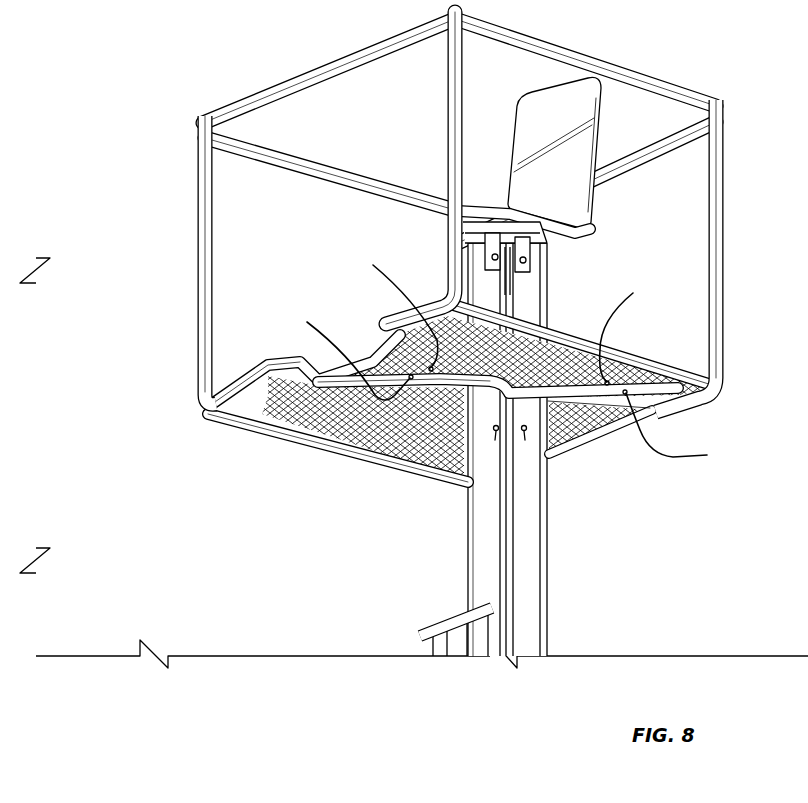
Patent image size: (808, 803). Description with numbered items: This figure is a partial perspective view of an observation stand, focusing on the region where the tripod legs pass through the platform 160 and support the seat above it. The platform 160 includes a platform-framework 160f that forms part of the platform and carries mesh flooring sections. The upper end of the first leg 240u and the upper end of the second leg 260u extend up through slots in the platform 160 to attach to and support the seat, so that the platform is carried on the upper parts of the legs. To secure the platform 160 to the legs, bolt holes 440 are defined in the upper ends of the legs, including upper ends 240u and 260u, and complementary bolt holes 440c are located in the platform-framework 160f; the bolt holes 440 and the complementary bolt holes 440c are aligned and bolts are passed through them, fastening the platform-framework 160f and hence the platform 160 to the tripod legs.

The platform 160 is at (273, 398).
The platform-framework 160f is at (280, 363).
The bolt holes 440 is at (495, 432).
The complementary bolt holes 440c is at (509, 357).
The upper end of second leg 260u is at (488, 543).
The upper end of first leg 240u is at (535, 538).